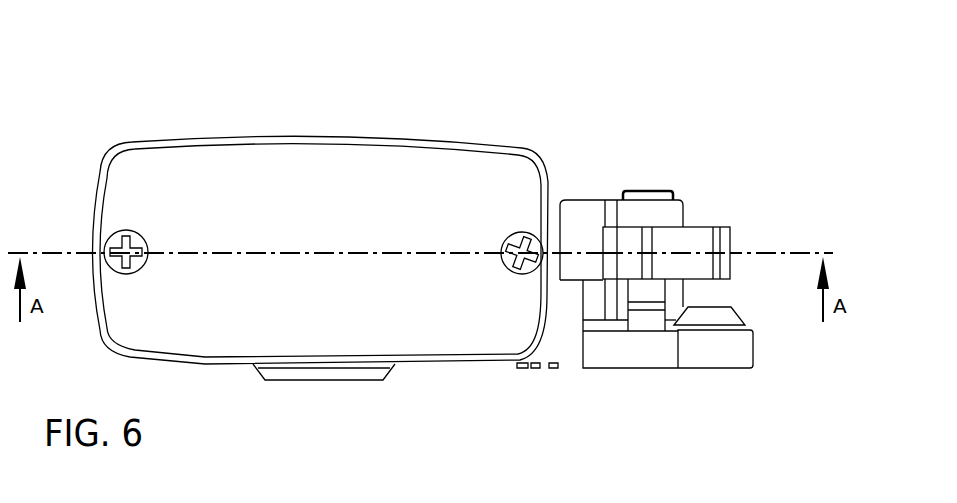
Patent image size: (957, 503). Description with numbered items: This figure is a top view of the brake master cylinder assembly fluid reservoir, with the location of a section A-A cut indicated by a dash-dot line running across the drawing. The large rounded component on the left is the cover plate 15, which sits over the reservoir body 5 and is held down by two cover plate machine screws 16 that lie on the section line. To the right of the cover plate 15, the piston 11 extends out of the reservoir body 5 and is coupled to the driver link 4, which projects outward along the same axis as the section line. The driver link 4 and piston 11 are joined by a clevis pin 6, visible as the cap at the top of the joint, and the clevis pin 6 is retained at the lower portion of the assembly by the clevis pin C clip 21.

The driver link 4 is at (737, 236).
The reservoir body 5 is at (607, 370).
The clevis pin 6 is at (652, 189).
The piston 11 is at (579, 231).
The cover plate 15 is at (489, 176).
The cover plate machine screw 16 is at (500, 240).
The clevis pin C clip 21 is at (676, 335).